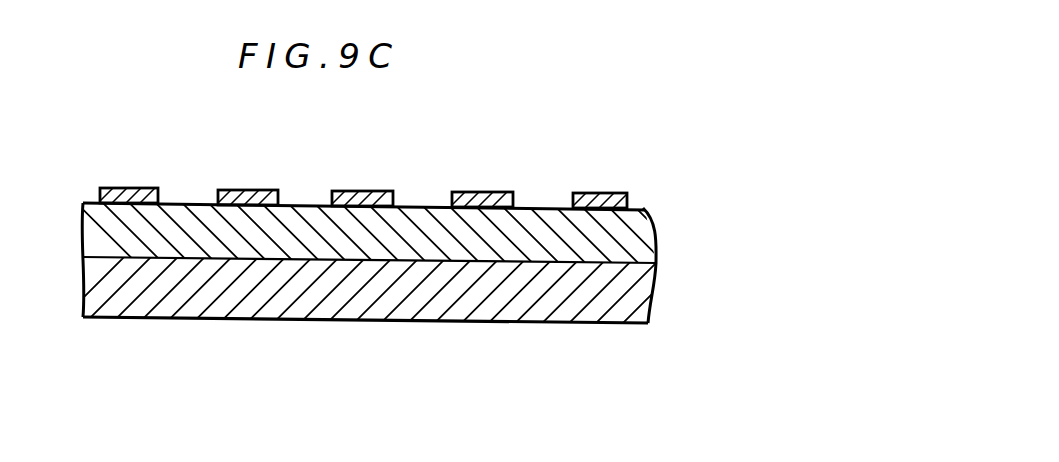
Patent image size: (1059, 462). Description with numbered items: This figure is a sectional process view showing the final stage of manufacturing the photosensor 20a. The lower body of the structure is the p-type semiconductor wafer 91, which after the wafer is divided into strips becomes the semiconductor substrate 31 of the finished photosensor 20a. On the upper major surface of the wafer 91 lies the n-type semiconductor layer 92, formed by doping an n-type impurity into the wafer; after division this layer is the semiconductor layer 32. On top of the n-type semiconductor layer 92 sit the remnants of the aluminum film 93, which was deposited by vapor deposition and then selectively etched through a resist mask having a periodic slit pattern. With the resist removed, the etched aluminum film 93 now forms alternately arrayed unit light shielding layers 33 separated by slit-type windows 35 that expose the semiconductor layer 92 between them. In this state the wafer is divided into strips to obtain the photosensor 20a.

The photosensor 20a is at (260, 330).
The p-type semiconductor wafer 91 is at (397, 316).
The semiconductor substrate 31 is at (498, 313).
The n-type semiconductor layer 92 is at (428, 235).
The semiconductor layer 32 is at (655, 233).
The aluminum film 93 is at (366, 156).
The unit light shielding layer 33 is at (135, 188).
The slit-type window 35 is at (186, 200).